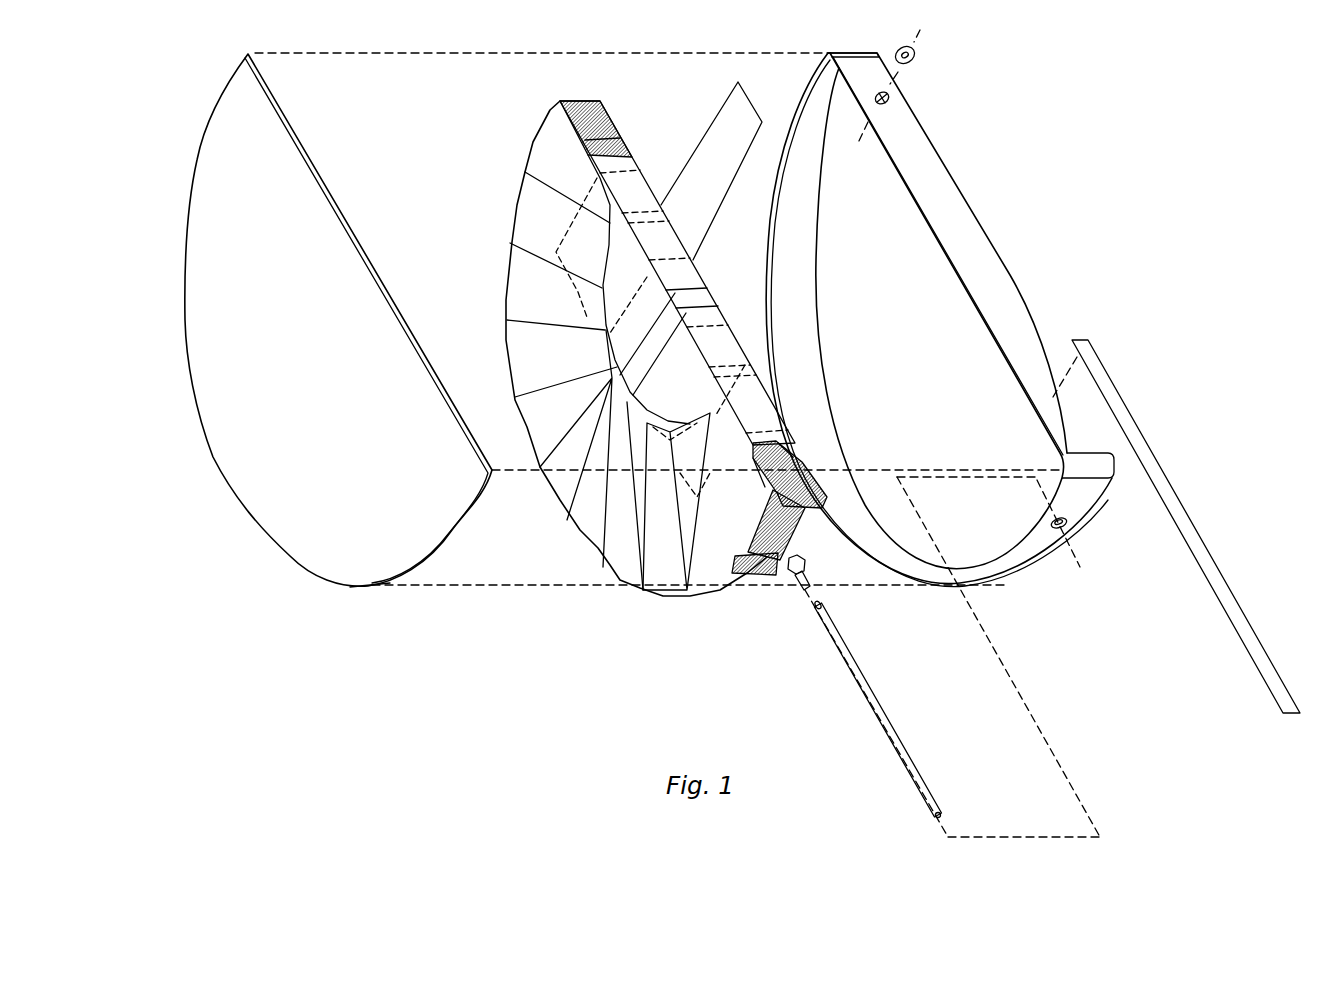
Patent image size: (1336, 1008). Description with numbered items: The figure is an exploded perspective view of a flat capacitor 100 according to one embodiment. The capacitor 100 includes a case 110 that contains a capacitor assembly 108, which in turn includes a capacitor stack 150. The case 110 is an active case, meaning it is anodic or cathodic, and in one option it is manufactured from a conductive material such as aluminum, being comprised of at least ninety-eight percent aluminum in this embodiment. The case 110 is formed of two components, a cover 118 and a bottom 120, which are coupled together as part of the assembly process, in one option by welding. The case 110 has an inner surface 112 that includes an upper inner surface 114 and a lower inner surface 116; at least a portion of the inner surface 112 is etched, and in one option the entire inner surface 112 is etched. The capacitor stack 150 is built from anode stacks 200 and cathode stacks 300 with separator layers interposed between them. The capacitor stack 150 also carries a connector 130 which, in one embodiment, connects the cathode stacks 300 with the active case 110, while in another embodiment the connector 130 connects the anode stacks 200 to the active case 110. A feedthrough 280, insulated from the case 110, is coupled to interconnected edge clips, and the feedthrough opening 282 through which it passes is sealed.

The flat capacitor 100 is at (1117, 120).
The capacitor assembly 108 is at (636, 366).
The case 110 is at (217, 456).
The inner surface 112 is at (917, 313).
The upper inner surface 114 is at (325, 183).
The lower inner surface 116 is at (798, 190).
The cover 118 is at (368, 586).
The bottom 120 is at (962, 192).
The connector 130 is at (748, 97).
The capacitor stack 150 is at (586, 554).
The anode stacks 200 is at (780, 536).
The feedthrough 280 is at (832, 640).
The feedthrough opening 282 is at (1068, 527).
The cathode stacks 300 is at (768, 570).